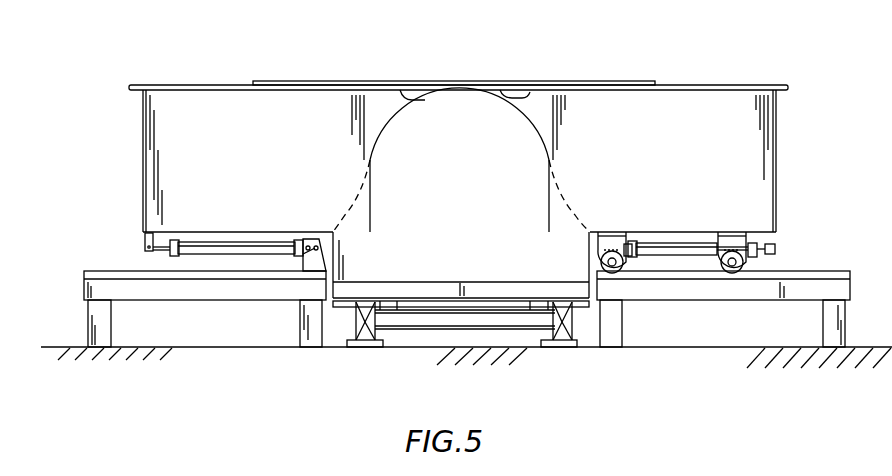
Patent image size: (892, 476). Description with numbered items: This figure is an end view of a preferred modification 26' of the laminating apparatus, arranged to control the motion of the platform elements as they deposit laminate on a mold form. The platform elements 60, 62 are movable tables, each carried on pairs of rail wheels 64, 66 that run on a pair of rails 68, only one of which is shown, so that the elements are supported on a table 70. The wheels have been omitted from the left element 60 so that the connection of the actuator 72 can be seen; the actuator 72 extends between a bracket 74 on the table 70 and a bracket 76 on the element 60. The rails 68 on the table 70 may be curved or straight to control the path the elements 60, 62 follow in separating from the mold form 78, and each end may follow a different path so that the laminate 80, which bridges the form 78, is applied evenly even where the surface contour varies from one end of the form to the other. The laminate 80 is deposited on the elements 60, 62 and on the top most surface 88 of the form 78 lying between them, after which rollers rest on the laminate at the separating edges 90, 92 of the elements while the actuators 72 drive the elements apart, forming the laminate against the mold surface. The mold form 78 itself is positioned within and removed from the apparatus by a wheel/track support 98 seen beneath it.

The preferred modification 26' is at (464, 188).
The platform element 60 is at (216, 86).
The platform element 62 is at (690, 88).
The rail wheel 64 is at (640, 246).
The rail wheel 66 is at (706, 246).
The rail 68 is at (215, 280).
The table 70 is at (155, 283).
The actuator 72 is at (247, 242).
The bracket 74 is at (318, 258).
The bracket 76 is at (143, 240).
The mold form 78 is at (474, 208).
The laminate 80 is at (492, 82).
The top most surface 88 is at (467, 90).
The separating edge 90 is at (398, 97).
The separating edge 92 is at (530, 96).
The wheel/track support 98 is at (405, 353).